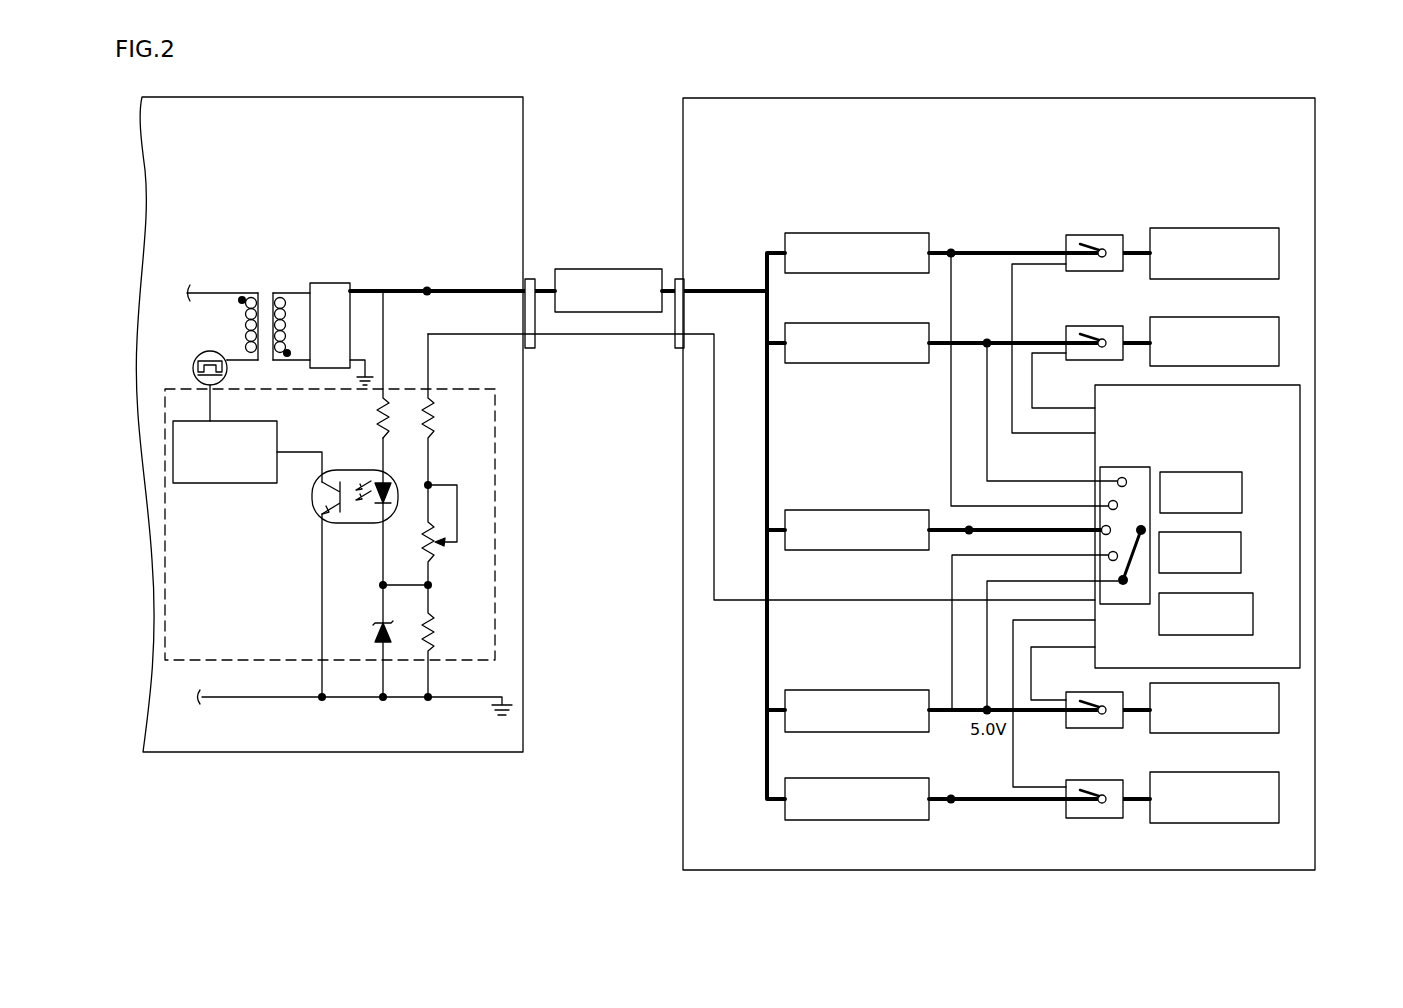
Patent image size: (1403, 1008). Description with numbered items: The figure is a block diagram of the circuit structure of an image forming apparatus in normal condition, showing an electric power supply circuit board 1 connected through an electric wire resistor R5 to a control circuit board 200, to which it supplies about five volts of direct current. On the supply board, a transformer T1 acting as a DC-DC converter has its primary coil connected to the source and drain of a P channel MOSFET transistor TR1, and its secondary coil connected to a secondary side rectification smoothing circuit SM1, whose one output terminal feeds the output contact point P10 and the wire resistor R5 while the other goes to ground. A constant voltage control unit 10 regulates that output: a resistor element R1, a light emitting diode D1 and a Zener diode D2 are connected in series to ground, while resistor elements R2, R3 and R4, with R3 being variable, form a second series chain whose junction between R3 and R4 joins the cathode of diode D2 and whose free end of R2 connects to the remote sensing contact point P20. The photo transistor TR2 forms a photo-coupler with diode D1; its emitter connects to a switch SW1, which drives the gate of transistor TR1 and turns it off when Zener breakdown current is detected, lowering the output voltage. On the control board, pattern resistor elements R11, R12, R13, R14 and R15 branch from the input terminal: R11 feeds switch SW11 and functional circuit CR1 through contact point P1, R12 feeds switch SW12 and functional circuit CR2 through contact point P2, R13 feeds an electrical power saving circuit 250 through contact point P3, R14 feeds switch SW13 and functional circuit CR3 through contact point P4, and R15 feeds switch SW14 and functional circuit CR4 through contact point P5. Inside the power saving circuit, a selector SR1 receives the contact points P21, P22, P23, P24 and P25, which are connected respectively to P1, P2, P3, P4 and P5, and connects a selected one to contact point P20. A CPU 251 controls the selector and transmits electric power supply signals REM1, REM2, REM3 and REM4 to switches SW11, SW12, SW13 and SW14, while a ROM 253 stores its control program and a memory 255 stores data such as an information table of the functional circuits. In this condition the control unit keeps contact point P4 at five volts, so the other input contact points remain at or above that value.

The electric power supply circuit board 1 is at (479, 97).
The control circuit board 200 is at (1270, 98).
The transformer T1 is at (262, 288).
The secondary side rectification smoothing circuit SM1 is at (330, 283).
The contact point P10 is at (427, 287).
The transistor TR1 is at (196, 372).
The constant voltage control unit 10 is at (495, 487).
The switch SW1 is at (218, 483).
The transistor TR2 is at (328, 502).
The diode D1 is at (387, 479).
The resistor element R1 is at (388, 402).
The resistor element R2 is at (436, 414).
The resistor element R3 is at (437, 558).
The resistor element R4 is at (437, 624).
The diode D2 is at (378, 621).
The electric wire resistor R5 is at (621, 269).
The resistor element R11 is at (905, 222).
The resistor element R12 is at (905, 312).
The resistor element R13 is at (905, 499).
The resistor element R14 is at (905, 679).
The resistor element R15 is at (905, 767).
The contact point P1 is at (951, 250).
The contact point P2 is at (988, 340).
The contact point P3 is at (966, 534).
The contact point P4 is at (985, 707).
The contact point P5 is at (952, 803).
The switch SW11 is at (1085, 238).
The switch SW12 is at (1085, 328).
The switch SW13 is at (1087, 729).
The switch SW14 is at (1087, 818).
The electric power supply signal REM1 is at (1061, 425).
The electric power supply signal REM2 is at (1061, 399).
The electric power supply signal REM3 is at (1061, 659).
The electric power supply signal REM4 is at (1061, 634).
The functional circuit CR1 is at (1279, 253).
The functional circuit CR2 is at (1279, 343).
The functional circuit CR3 is at (1279, 710).
The functional circuit CR4 is at (1279, 799).
The electrical power saving circuit 250 is at (1290, 562).
The CPU 251 is at (1225, 472).
The ROM 253 is at (1224, 532).
The memory 255 is at (1224, 593).
The selector SR1 is at (1100, 470).
The contact point P20 is at (1136, 532).
The contact point P21 is at (1113, 500).
The contact point P22 is at (1122, 477).
The contact point P23 is at (1110, 528).
The contact point P24 is at (1130, 586).
The contact point P25 is at (1123, 586).